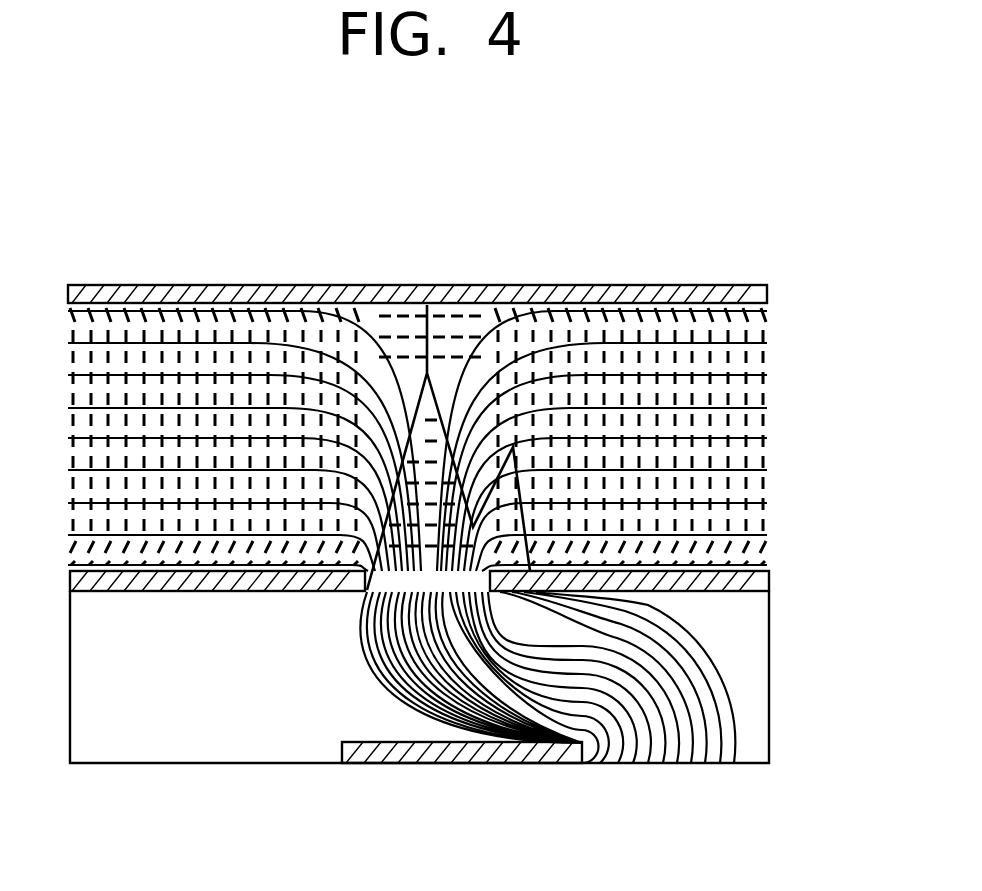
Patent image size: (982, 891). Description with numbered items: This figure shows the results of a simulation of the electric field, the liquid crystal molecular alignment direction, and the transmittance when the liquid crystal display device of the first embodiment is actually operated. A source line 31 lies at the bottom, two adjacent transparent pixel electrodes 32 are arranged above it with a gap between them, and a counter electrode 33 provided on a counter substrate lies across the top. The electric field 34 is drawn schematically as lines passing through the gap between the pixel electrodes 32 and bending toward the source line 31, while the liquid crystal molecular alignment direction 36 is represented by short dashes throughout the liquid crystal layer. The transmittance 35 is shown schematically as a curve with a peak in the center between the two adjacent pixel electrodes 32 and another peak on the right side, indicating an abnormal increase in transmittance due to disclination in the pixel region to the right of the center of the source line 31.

The source line 31 is at (473, 753).
The transparent pixel electrode 32 is at (718, 586).
The counter electrode 33 is at (212, 297).
The electric field 34 is at (725, 678).
The transmittance 35 is at (427, 372).
The liquid crystal molecular alignment direction 36 is at (732, 418).